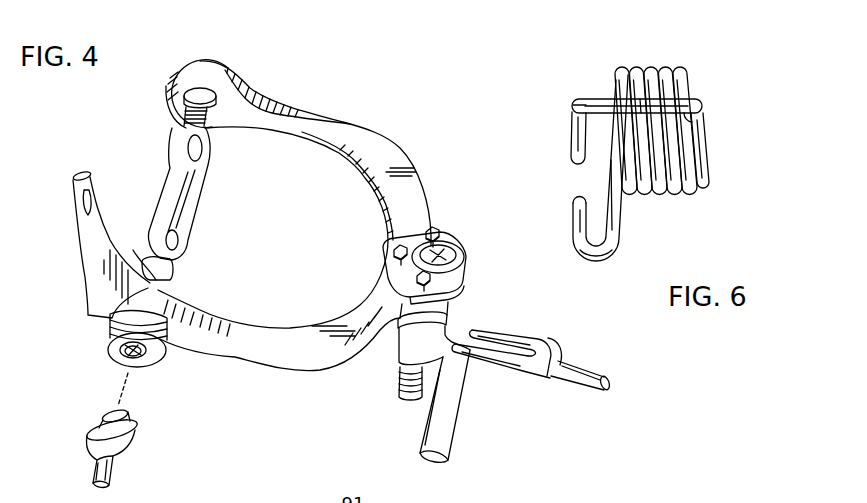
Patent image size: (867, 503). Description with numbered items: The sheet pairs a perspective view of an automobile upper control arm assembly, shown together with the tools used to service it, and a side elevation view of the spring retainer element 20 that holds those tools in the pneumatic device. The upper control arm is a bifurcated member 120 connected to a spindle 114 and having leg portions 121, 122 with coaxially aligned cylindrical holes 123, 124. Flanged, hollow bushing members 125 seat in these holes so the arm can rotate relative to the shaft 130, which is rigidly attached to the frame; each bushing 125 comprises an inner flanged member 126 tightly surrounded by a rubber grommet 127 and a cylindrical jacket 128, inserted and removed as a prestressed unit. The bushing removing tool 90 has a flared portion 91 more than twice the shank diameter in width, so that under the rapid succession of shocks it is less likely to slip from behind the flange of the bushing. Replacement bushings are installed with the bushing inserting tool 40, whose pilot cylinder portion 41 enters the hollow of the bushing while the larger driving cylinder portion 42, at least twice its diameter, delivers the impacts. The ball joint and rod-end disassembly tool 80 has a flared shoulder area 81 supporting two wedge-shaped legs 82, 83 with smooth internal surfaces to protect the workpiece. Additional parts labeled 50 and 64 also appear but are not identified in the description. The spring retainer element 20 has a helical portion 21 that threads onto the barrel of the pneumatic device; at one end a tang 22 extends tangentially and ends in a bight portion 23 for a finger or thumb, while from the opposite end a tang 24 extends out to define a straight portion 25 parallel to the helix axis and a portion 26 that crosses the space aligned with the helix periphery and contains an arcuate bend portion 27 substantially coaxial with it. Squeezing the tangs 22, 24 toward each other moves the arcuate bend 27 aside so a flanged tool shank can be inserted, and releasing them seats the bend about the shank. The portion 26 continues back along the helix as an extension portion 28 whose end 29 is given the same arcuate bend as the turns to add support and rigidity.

In FIG. 6, the spring retainer element 20 is at (632, 147).
In FIG. 6, the helical portion 21 is at (658, 205).
In FIG. 6, the tang 22 is at (573, 210).
In FIG. 6, the bight portion 23 is at (598, 255).
In FIG. 6, the tang 24 is at (660, 103).
In FIG. 6, the straight portion 25 is at (605, 100).
In FIG. 6, the portion 26 is at (571, 103).
In FIG. 6, the arcuate bend portion 27 is at (571, 136).
In FIG. 6, the extension portion 28 is at (693, 119).
In FIG. 6, the end of extension portion 29 is at (705, 190).
In FIG. 4, the bushing inserting tool 40 is at (110, 446).
In FIG. 4, the pilot cylinder portion 41 is at (110, 413).
In FIG. 4, the driving cylinder portion 42 is at (132, 447).
In FIG. 4, the pivot assembly 50 is at (420, 344).
In FIG. 4, the threaded stem 64 is at (406, 397).
In FIG. 4, the ball joint and rod-end disassembly tool 80 is at (534, 358).
In FIG. 4, the flared shoulder area 81 is at (547, 380).
In FIG. 4, the wedge-shaped leg 82 is at (513, 334).
In FIG. 4, the wedge-shaped leg 83 is at (507, 370).
In FIG. 4, the bushing removing tool 90 is at (78, 225).
In FIG. 4, the flared portion 91 is at (133, 250).
In FIG. 4, the spindle 114 is at (453, 407).
In FIG. 4, the bifurcated member 120 is at (297, 213).
In FIG. 4, the leg portion 121 is at (303, 108).
In FIG. 4, the leg portion 122 is at (240, 325).
In FIG. 4, the cylindrical hole 123 is at (187, 98).
In FIG. 4, the cylindrical hole 124 is at (137, 318).
In FIG. 4, the flanged hollow bushing member 125 is at (158, 377).
In FIG. 4, the inner flanged member 126 is at (124, 330).
In FIG. 4, the rubber grommet 127 is at (120, 334).
In FIG. 4, the cylindrical jacket 128 is at (150, 362).
In FIG. 4, the shaft 130 is at (167, 170).